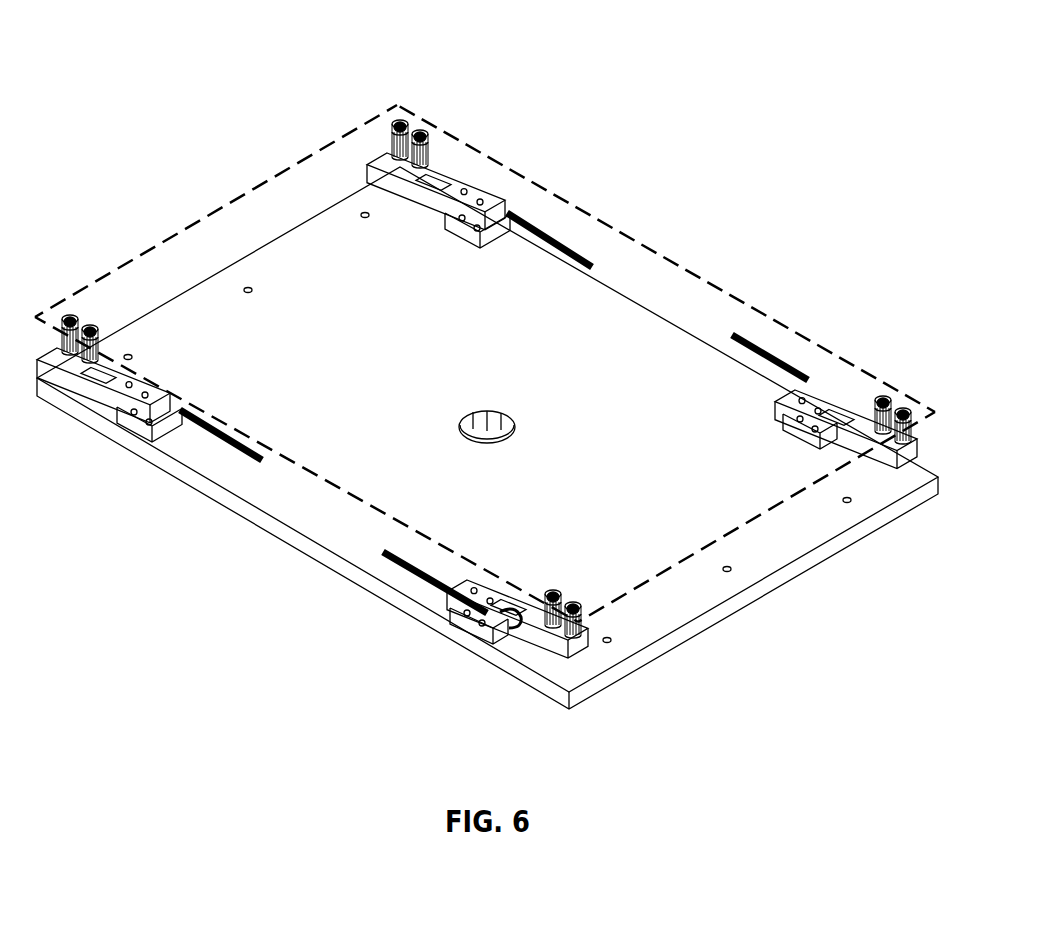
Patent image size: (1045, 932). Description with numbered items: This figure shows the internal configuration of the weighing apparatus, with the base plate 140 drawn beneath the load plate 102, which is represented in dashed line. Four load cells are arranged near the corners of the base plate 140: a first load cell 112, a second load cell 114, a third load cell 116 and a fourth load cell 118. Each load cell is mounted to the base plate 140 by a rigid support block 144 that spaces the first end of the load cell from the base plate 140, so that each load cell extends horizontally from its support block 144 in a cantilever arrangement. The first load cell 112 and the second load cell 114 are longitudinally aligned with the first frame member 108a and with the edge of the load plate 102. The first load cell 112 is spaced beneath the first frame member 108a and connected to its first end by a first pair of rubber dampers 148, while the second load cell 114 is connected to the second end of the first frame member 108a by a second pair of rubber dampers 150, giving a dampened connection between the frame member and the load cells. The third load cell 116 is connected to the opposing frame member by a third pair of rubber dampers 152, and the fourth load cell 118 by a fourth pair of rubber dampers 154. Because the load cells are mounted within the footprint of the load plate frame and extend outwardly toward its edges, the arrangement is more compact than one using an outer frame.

The load plate 102 is at (620, 245).
The first frame member 108a is at (797, 337).
The first load cell 112 is at (828, 397).
The second load cell 114 is at (473, 184).
The third load cell 116 is at (492, 588).
The fourth load cell 118 is at (140, 377).
The base plate 140 is at (215, 472).
The support block 144 is at (133, 440).
The first pair of rubber dampers 148 is at (903, 410).
The second pair of rubber dampers 150 is at (422, 128).
The third pair of rubber dampers 152 is at (570, 598).
The fourth pair of rubber dampers 154 is at (87, 313).